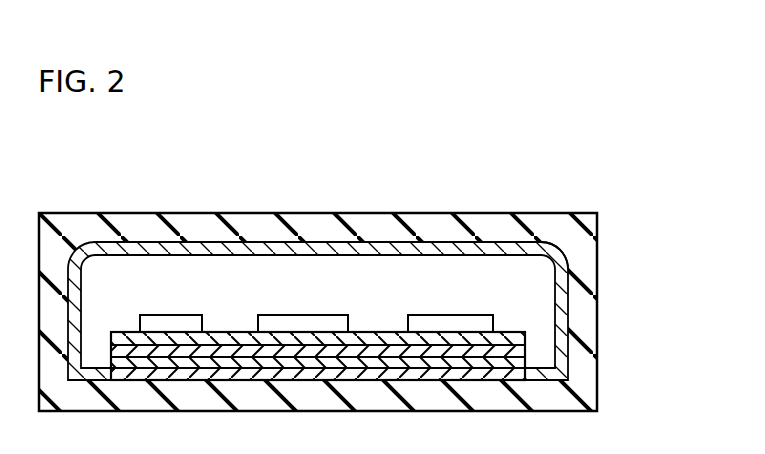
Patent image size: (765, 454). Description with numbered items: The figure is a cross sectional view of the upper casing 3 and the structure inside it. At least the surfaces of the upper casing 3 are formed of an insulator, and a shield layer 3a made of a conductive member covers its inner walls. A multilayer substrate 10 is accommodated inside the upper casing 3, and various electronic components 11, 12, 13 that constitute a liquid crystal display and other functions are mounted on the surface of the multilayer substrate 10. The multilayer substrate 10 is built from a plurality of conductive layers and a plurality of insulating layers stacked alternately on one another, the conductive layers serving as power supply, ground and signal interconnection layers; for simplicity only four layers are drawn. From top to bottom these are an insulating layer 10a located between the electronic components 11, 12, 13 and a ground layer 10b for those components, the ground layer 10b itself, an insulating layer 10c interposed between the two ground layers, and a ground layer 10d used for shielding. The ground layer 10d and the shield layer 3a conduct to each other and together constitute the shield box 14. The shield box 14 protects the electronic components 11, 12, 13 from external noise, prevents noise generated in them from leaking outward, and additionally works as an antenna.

The upper casing 3 is at (78, 232).
The shield layer 3a is at (228, 250).
The multilayer substrate 10 is at (388, 290).
The insulating layer 10a is at (526, 336).
The ground layer 10b is at (512, 351).
The insulating layer 10c is at (510, 363).
The ground layer 10d is at (505, 381).
The electronic component 11 is at (171, 325).
The electronic component 12 is at (303, 323).
The electronic component 13 is at (452, 323).
The shield box 14 is at (560, 249).